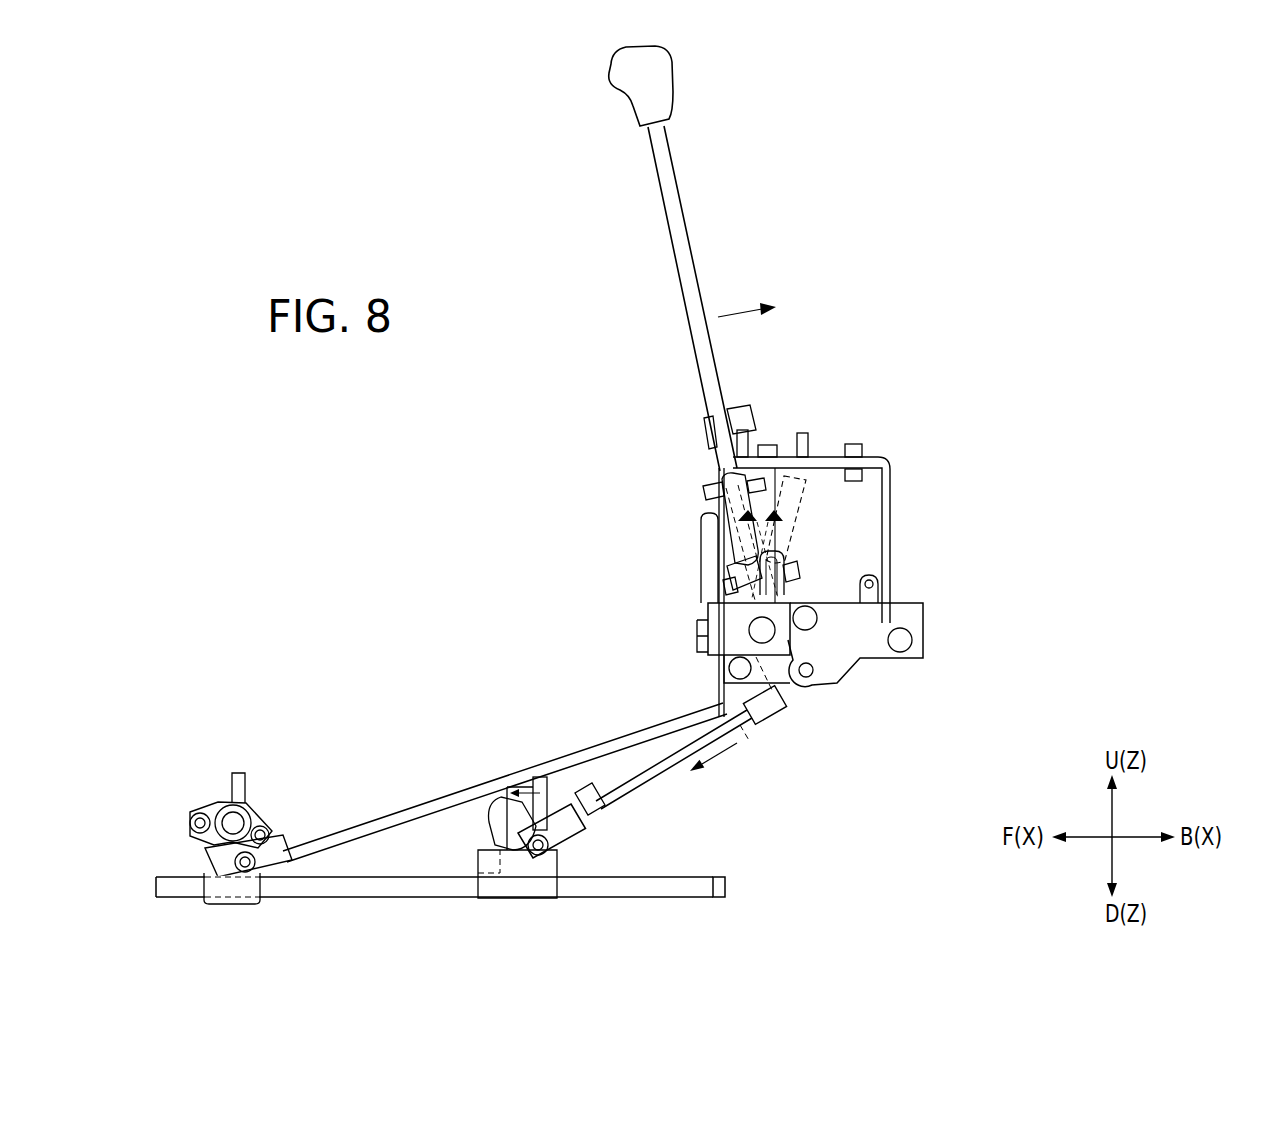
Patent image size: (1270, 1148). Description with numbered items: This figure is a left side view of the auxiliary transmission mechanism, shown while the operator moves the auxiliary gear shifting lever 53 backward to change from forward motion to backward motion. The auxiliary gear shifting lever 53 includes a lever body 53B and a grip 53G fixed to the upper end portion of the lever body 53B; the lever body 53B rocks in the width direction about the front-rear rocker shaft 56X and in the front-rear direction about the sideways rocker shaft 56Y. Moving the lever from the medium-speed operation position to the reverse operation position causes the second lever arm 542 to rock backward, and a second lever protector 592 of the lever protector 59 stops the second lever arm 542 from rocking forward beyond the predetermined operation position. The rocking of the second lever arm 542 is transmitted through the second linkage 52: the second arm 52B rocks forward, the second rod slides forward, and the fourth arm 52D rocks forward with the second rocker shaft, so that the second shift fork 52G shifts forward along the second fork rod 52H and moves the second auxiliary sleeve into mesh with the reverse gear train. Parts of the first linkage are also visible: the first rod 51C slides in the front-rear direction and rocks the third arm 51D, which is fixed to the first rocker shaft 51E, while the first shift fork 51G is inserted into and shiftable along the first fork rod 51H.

The auxiliary gear shifting lever 53 is at (772, 66).
The grip 53G is at (666, 91).
The lever body 53B is at (666, 147).
The second lever arm 542 is at (716, 478).
The second lever protector 592 is at (710, 540).
The lever protector 59 is at (665, 555).
The front-rear rocker shaft 56X is at (714, 572).
The sideways rocker shaft 56Y is at (762, 630).
The second arm 52B is at (818, 650).
The second linkage 52 is at (657, 778).
The fourth arm 52D is at (507, 824).
The second shift fork 52G is at (547, 786).
The second fork rod 52H is at (717, 893).
The first rod 51C is at (409, 808).
The third arm 51D is at (216, 847).
The first rocker shaft 51E is at (228, 816).
The first shift fork 51G is at (245, 796).
The first fork rod 51H is at (342, 893).